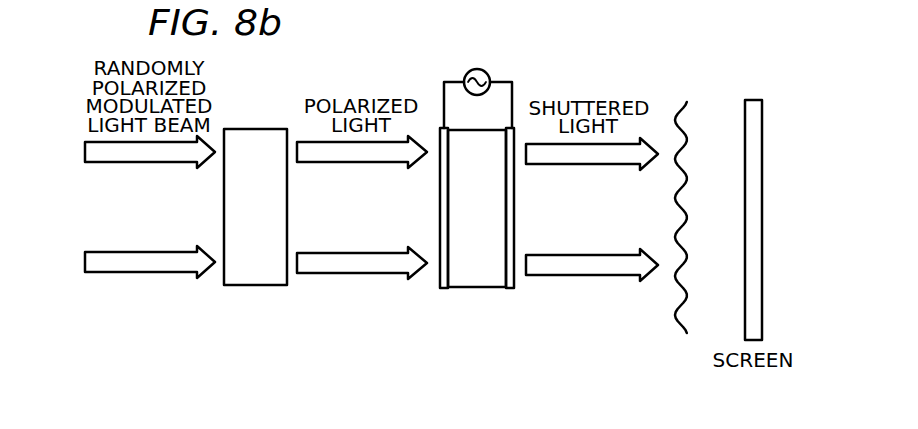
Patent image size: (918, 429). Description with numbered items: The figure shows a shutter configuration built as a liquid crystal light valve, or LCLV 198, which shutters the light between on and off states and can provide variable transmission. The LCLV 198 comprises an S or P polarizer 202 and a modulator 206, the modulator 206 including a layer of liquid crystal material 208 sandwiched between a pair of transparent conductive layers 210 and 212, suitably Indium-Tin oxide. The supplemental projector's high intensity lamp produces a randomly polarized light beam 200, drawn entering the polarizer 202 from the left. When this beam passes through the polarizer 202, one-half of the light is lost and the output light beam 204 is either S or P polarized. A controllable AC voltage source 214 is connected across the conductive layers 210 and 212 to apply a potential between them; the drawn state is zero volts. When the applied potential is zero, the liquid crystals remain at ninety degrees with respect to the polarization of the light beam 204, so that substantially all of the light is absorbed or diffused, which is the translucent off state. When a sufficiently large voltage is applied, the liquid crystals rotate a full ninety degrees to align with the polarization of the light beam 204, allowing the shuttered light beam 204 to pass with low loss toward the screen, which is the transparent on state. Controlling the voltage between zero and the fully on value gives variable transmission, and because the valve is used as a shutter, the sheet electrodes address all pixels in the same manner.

The LCLV 198 is at (205, 337).
The randomly polarized light beam 200 is at (172, 252).
The polarizer 202 is at (244, 129).
The light beam 204 is at (380, 253).
The modulator 206 is at (489, 189).
The layer of liquid crystal material 208 is at (486, 293).
The transparent conductive layer 210 is at (440, 284).
The transparent conductive layer 212 is at (514, 284).
The controllable AC voltage source 214 is at (467, 72).